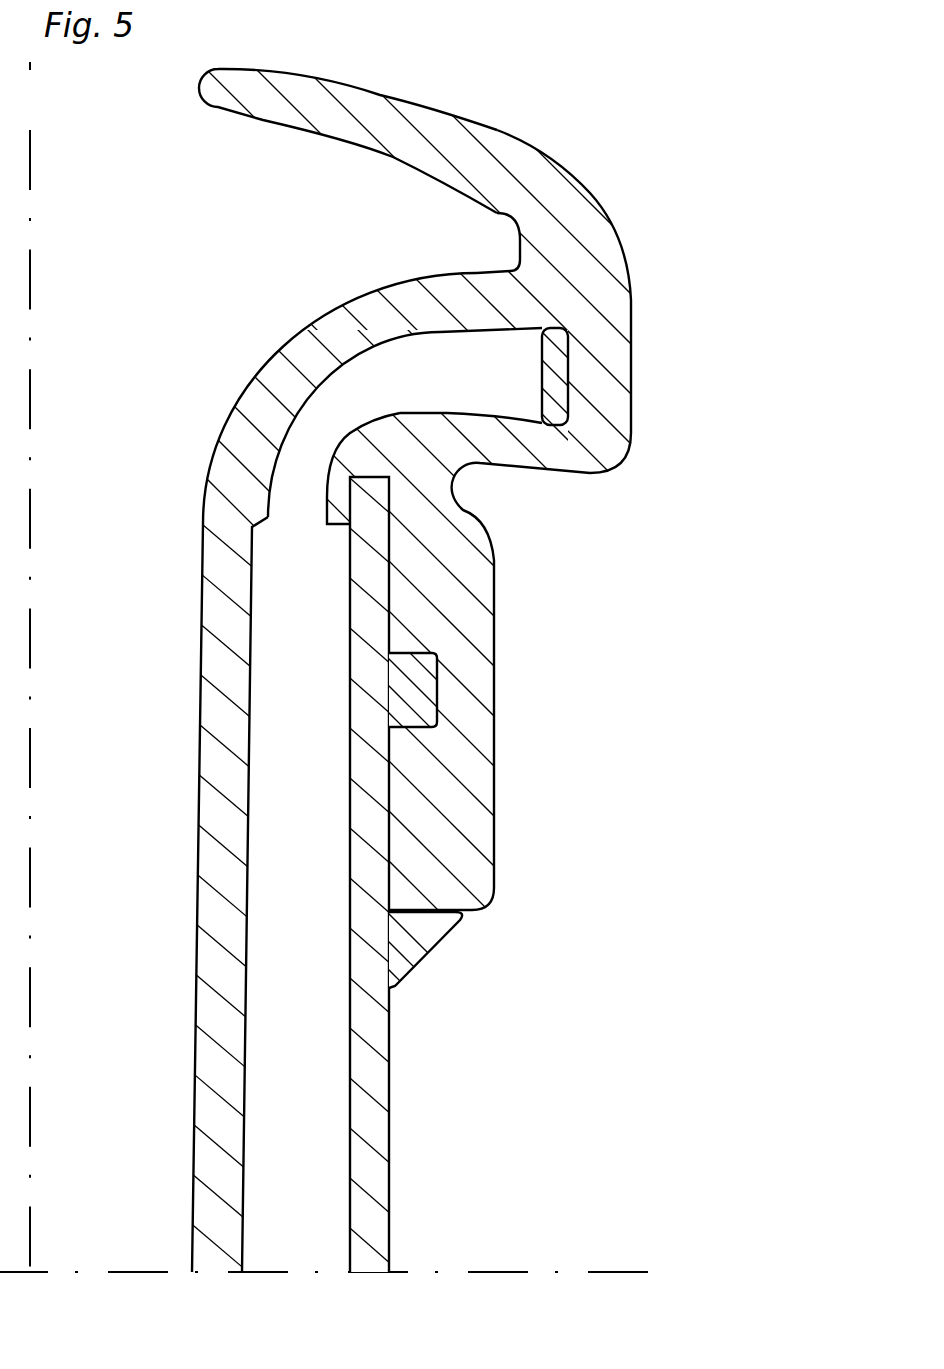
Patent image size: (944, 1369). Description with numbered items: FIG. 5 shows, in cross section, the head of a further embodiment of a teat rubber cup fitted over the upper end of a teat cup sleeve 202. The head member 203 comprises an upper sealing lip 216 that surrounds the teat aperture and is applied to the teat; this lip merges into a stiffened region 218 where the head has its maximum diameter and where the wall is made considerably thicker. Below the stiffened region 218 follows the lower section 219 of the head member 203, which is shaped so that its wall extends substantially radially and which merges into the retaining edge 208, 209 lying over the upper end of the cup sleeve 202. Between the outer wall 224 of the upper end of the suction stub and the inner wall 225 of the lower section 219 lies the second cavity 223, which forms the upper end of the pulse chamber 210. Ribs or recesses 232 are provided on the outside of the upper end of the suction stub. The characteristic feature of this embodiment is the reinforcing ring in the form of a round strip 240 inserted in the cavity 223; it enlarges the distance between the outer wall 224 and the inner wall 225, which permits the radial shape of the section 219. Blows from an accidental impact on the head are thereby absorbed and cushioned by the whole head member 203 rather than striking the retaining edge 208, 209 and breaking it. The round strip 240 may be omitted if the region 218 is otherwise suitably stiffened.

The teat cup sleeve 202 is at (362, 962).
The head member 203 is at (520, 122).
The retaining edge 208 is at (473, 608).
The retaining edge portion 209 is at (338, 515).
The pulse chamber 210 is at (320, 1045).
The sealing lip 216 is at (398, 118).
The stiffened region 218 is at (553, 262).
The lower section of the head member 219 is at (527, 462).
The second cavity 223 is at (427, 392).
The outer wall of the upper end of the suction stub 224 is at (482, 329).
The inner wall of the lower section 225 is at (507, 423).
The ribs or recesses 232 is at (327, 384).
The round strip 240 is at (563, 363).